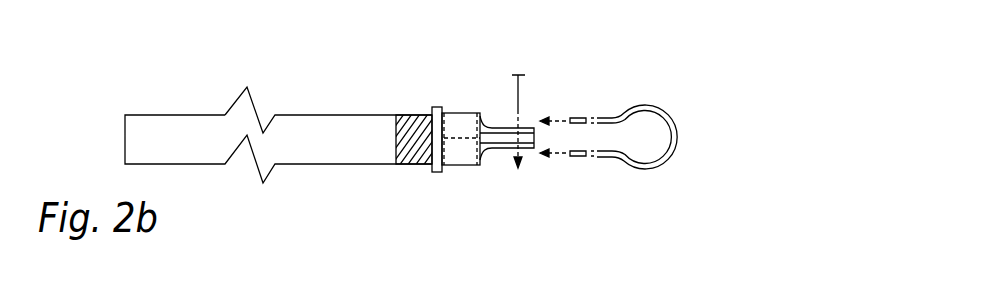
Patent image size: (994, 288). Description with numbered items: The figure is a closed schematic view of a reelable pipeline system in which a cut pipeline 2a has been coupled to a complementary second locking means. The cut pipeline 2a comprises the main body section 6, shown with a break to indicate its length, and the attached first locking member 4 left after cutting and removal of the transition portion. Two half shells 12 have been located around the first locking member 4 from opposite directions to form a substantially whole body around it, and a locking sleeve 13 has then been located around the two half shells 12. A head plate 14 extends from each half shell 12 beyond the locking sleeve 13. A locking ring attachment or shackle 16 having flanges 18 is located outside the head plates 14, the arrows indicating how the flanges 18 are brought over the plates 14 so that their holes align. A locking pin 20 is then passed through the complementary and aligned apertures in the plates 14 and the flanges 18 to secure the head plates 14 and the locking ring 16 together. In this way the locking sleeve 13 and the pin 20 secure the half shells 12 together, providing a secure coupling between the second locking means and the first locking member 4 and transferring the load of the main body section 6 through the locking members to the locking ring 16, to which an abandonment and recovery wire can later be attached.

The cut pipeline 2a is at (333, 197).
The main body section 6 is at (338, 115).
The first locking member 4 is at (410, 115).
The half shells 12 is at (452, 112).
The locking sleeve 13 is at (468, 112).
The head plate 14 is at (497, 152).
The locking pin 20 is at (523, 92).
The locking ring 16 is at (656, 106).
The flanges 18 is at (583, 158).